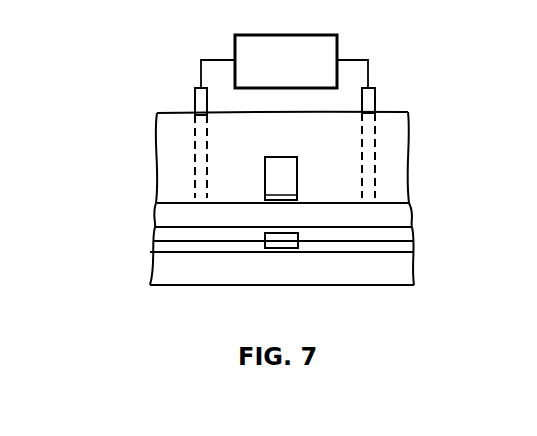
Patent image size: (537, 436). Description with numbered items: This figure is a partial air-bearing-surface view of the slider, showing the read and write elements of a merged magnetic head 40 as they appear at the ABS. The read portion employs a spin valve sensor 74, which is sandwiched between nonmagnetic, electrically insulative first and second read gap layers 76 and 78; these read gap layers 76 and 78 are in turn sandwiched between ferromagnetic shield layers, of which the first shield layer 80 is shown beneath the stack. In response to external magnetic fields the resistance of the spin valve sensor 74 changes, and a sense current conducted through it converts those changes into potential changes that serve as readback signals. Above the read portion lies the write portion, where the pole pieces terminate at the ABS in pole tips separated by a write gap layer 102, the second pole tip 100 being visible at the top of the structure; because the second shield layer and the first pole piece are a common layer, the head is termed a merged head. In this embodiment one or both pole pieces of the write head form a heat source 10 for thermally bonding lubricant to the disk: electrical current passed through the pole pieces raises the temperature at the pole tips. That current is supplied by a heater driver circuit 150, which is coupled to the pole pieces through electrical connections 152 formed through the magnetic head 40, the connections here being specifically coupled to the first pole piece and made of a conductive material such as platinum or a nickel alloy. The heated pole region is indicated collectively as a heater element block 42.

The heat source 10 is at (307, 170).
The merged magnetic head 40 is at (435, 123).
The heater element block 42 is at (167, 137).
The spin valve sensor 74 is at (283, 248).
The first read gap layer 76 is at (188, 253).
The second read gap layer 78 is at (383, 233).
The first shield layer 80 is at (403, 268).
The second pole tip 100 is at (280, 157).
The write gap layer 102 is at (285, 198).
The heater driver circuit 150 is at (278, 35).
The electrical connections 152 is at (192, 100).